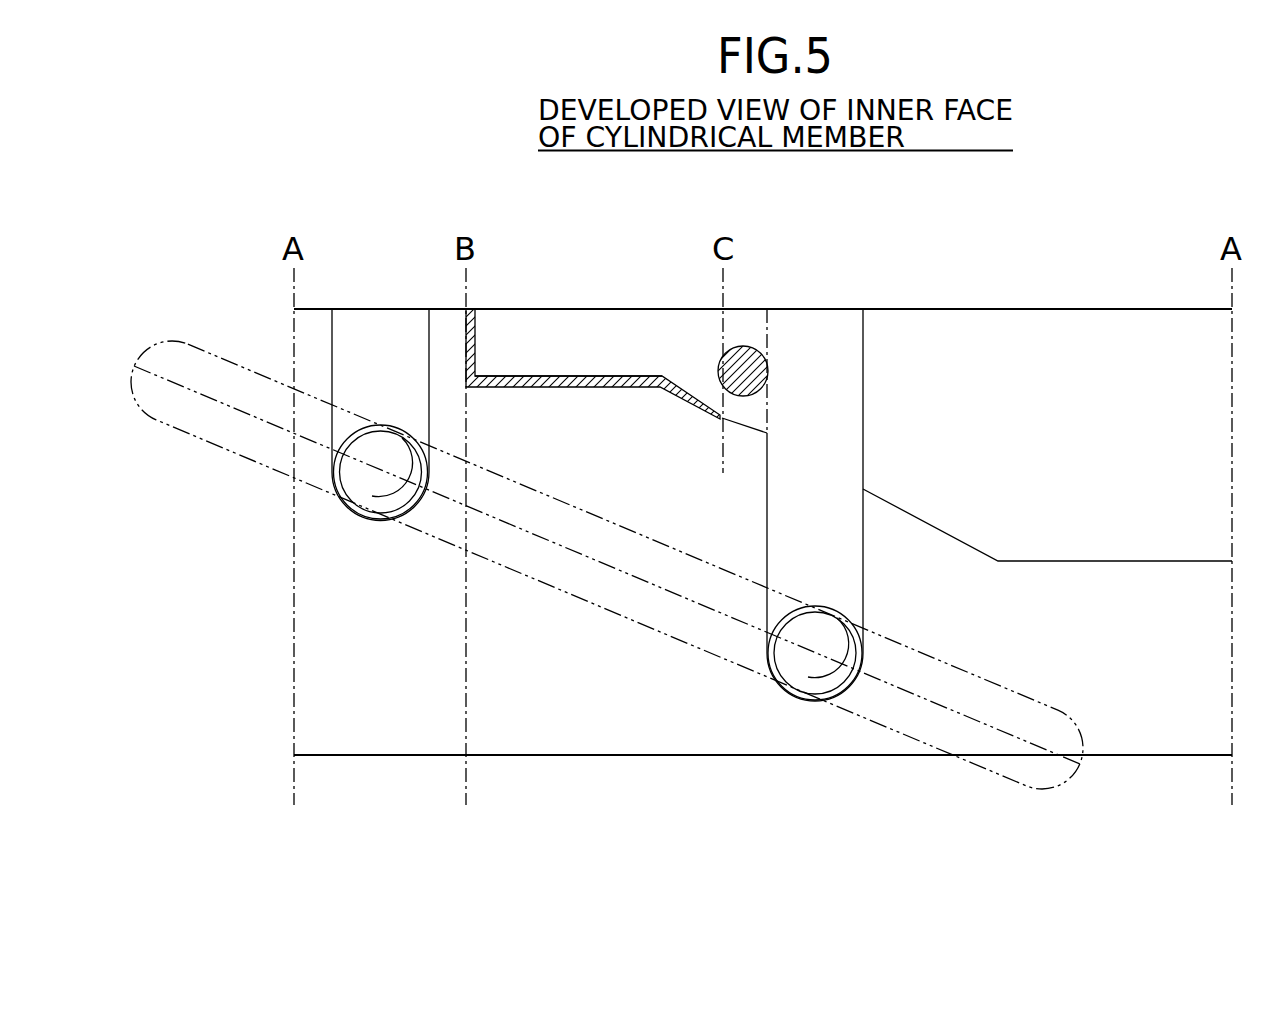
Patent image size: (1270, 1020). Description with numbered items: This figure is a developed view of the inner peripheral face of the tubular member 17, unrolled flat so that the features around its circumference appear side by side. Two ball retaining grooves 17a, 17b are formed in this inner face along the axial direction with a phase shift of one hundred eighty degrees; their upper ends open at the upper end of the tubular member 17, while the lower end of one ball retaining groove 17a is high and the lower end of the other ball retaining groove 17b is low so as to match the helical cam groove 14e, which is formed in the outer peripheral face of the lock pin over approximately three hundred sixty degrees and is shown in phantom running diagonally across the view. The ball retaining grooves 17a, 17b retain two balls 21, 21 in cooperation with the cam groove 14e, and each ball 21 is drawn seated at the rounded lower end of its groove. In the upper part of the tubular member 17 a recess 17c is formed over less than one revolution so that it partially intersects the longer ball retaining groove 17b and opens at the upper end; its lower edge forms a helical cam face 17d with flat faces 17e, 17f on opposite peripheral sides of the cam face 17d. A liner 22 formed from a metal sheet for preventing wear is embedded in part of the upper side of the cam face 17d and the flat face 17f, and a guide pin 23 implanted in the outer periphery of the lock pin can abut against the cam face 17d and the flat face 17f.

The tubular member 17 is at (1040, 298).
The ball retaining groove 17a is at (430, 348).
The ball retaining groove 17b is at (863, 520).
The recess 17c is at (1095, 439).
The helical cam face 17d is at (748, 423).
The flat face 17e is at (1090, 561).
The flat face 17f is at (585, 376).
The ball 21 is at (357, 457).
The liner 22 is at (545, 362).
The guide pin 23 is at (765, 358).
The helical cam groove 14e is at (682, 546).